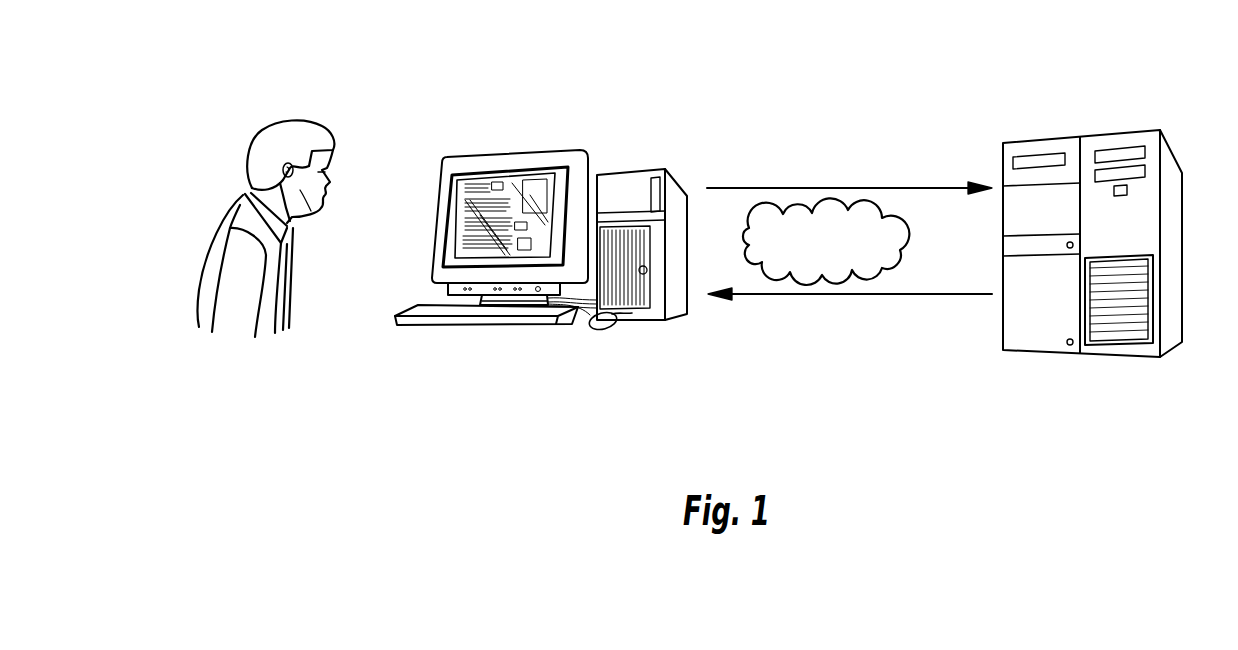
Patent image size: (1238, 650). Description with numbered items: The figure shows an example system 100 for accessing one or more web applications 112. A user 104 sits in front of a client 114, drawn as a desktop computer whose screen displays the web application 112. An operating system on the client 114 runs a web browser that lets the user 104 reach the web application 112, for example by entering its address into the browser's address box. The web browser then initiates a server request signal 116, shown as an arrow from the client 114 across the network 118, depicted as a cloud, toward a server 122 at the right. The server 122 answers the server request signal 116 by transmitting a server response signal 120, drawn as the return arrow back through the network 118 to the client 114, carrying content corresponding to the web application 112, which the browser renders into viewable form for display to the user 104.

The system 100 is at (214, 398).
The user 104 is at (270, 125).
The web application 112 is at (488, 255).
The client 114 is at (560, 148).
The server request signal 116 is at (785, 188).
The network 118 is at (913, 250).
The server response signal 120 is at (877, 294).
The server 122 is at (1057, 138).